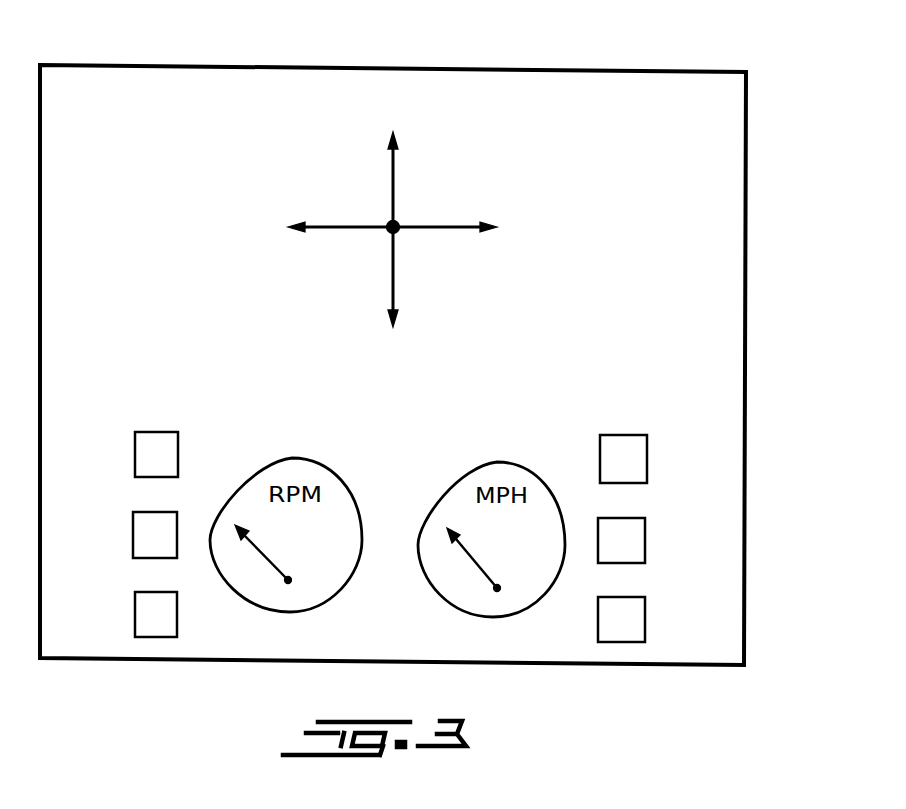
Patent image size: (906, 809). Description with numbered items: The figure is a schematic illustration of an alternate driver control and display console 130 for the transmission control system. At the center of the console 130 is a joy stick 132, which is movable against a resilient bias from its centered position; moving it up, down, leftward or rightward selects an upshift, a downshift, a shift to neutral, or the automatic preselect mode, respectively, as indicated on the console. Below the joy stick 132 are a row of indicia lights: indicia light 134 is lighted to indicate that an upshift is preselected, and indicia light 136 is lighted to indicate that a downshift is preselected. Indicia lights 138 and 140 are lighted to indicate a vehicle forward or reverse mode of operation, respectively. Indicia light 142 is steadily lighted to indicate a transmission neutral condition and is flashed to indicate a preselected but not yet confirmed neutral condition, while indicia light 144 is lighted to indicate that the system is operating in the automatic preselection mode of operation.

The driver control and display console 130 is at (762, 176).
The joy stick 132 is at (421, 211).
The indicia light 134 is at (135, 447).
The indicia light 136 is at (648, 471).
The indicia light 138 is at (133, 529).
The indicia light 140 is at (135, 607).
The indicia light 142 is at (645, 549).
The indicia light 144 is at (645, 629).